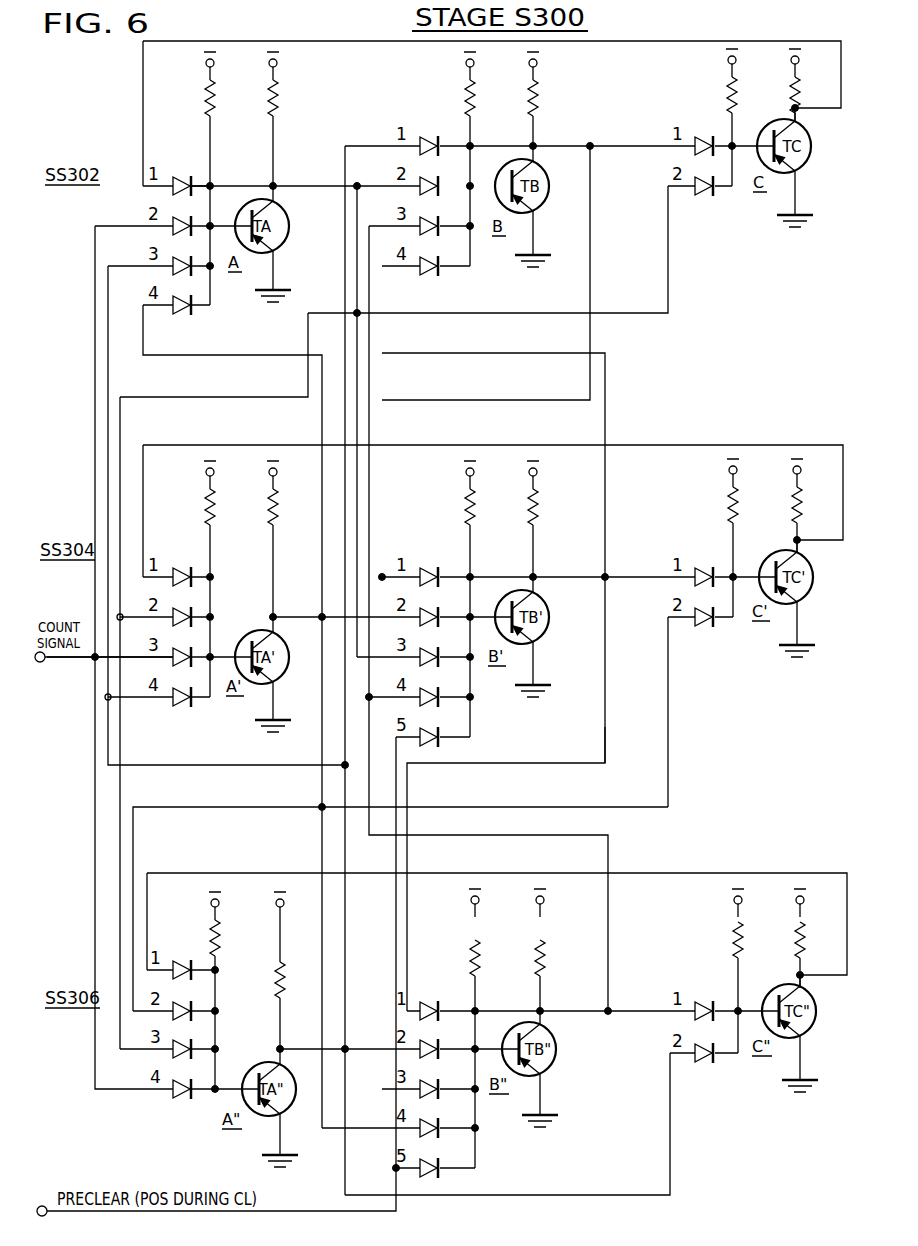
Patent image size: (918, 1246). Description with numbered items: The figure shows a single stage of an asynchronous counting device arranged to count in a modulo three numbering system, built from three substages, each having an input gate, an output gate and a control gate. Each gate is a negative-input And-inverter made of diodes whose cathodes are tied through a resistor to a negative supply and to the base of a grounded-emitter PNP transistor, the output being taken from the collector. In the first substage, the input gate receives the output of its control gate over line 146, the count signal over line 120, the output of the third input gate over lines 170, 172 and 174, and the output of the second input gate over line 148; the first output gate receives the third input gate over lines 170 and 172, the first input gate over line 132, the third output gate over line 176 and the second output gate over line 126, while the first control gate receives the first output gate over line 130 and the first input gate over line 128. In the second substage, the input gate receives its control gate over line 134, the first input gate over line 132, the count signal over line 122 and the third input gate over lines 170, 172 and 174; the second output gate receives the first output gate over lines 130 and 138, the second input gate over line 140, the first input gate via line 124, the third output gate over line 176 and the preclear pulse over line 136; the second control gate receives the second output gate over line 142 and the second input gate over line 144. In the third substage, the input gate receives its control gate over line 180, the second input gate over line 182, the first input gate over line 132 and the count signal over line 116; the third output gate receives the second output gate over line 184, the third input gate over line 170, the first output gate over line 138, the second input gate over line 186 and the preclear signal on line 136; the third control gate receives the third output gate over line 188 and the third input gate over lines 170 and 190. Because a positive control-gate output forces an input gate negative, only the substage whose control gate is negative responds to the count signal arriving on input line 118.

The line 116 is at (135, 1089).
The input line 118 is at (80, 660).
The line 120 is at (95, 245).
The line 122 is at (100, 663).
The line 124 is at (318, 186).
The line 126 is at (605, 540).
The line 128 is at (668, 275).
The line 130 is at (615, 146).
The line 132 is at (308, 332).
The line 134 is at (715, 445).
The line 136 is at (398, 1205).
The line 138 is at (490, 400).
The line 140 is at (335, 618).
The line 142 is at (645, 580).
The line 144 is at (668, 740).
The line 146 is at (715, 41).
The line 148 is at (322, 530).
The line 170 is at (368, 1052).
The line 172 is at (348, 930).
The line 174 is at (225, 765).
The line 176 is at (608, 922).
The line 180 is at (665, 873).
The line 182 is at (245, 805).
The line 184 is at (605, 727).
The line 186 is at (335, 1128).
The line 188 is at (655, 1013).
The line 190 is at (670, 1145).